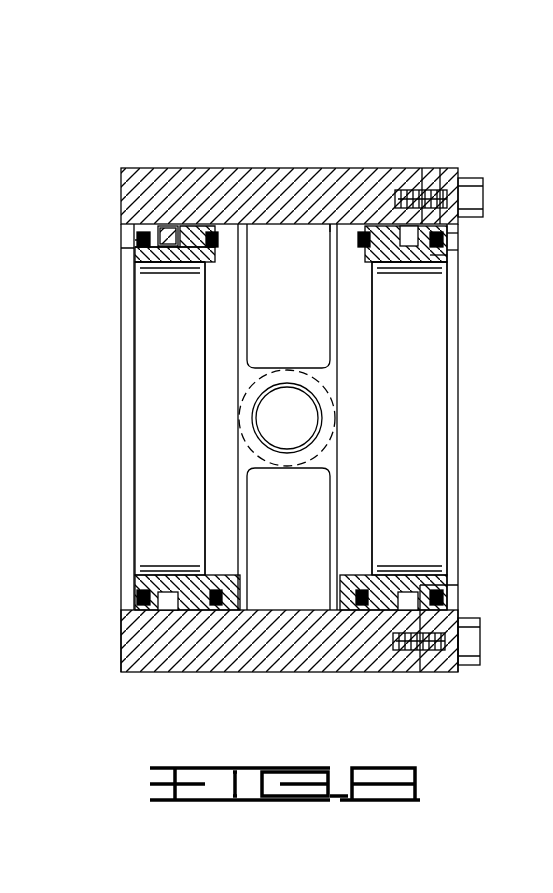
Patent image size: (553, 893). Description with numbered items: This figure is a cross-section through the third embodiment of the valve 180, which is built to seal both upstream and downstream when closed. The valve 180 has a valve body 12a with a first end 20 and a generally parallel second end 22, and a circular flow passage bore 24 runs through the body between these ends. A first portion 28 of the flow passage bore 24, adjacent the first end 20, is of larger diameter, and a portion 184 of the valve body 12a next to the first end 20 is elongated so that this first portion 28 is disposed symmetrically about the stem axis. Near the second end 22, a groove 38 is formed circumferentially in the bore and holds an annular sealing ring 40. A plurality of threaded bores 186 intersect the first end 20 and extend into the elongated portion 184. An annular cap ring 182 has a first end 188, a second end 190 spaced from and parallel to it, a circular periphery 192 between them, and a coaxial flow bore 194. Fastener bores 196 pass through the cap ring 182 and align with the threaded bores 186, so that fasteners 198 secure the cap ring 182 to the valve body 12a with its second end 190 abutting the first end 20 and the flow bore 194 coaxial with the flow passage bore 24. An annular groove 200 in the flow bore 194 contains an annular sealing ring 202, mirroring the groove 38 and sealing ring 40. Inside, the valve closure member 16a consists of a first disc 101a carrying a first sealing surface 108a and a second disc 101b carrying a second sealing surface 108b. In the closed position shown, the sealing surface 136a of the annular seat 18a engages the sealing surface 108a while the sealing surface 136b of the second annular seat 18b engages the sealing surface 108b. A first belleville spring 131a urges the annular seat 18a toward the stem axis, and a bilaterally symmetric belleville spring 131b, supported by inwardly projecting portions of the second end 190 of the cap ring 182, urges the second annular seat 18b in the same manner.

The valve 180 is at (274, 100).
The valve body 12a is at (316, 166).
The first portion of the flow passage bore 28 is at (286, 170).
The flow passage bore 24 is at (342, 170).
The elongated portion of the valve body 184 is at (376, 168).
The second end of the cap ring 190 is at (410, 168).
The circular periphery of the cap ring 192 is at (436, 168).
The cap ring 182 is at (450, 168).
The first end of the cap ring 188 is at (462, 172).
The fasteners 198 is at (481, 641).
The fastener bores 196 is at (445, 202).
The annular groove 200 is at (454, 234).
The flow bore of the cap ring 194 is at (454, 251).
The annular sealing ring 202 is at (452, 262).
The first end of the valve body 20 is at (428, 268).
The belleville spring 131b is at (412, 262).
The sealing surface of the second annular seat 136b is at (370, 262).
The second sealing surface 108b is at (358, 355).
The second disc 101b is at (372, 412).
The second annular seat 18b is at (430, 572).
The second end of the valve body 22 is at (120, 181).
The annular sealing ring 40 is at (142, 230).
The groove 38 is at (135, 240).
The first belleville spring 131a is at (168, 228).
The sealing surface of the first annular seat 136a is at (210, 265).
The first sealing surface 108a is at (216, 350).
The first disc 101a is at (206, 420).
The valve closure member 16a is at (202, 452).
The annular seat 18a is at (160, 572).
The threaded bores 186 is at (412, 655).